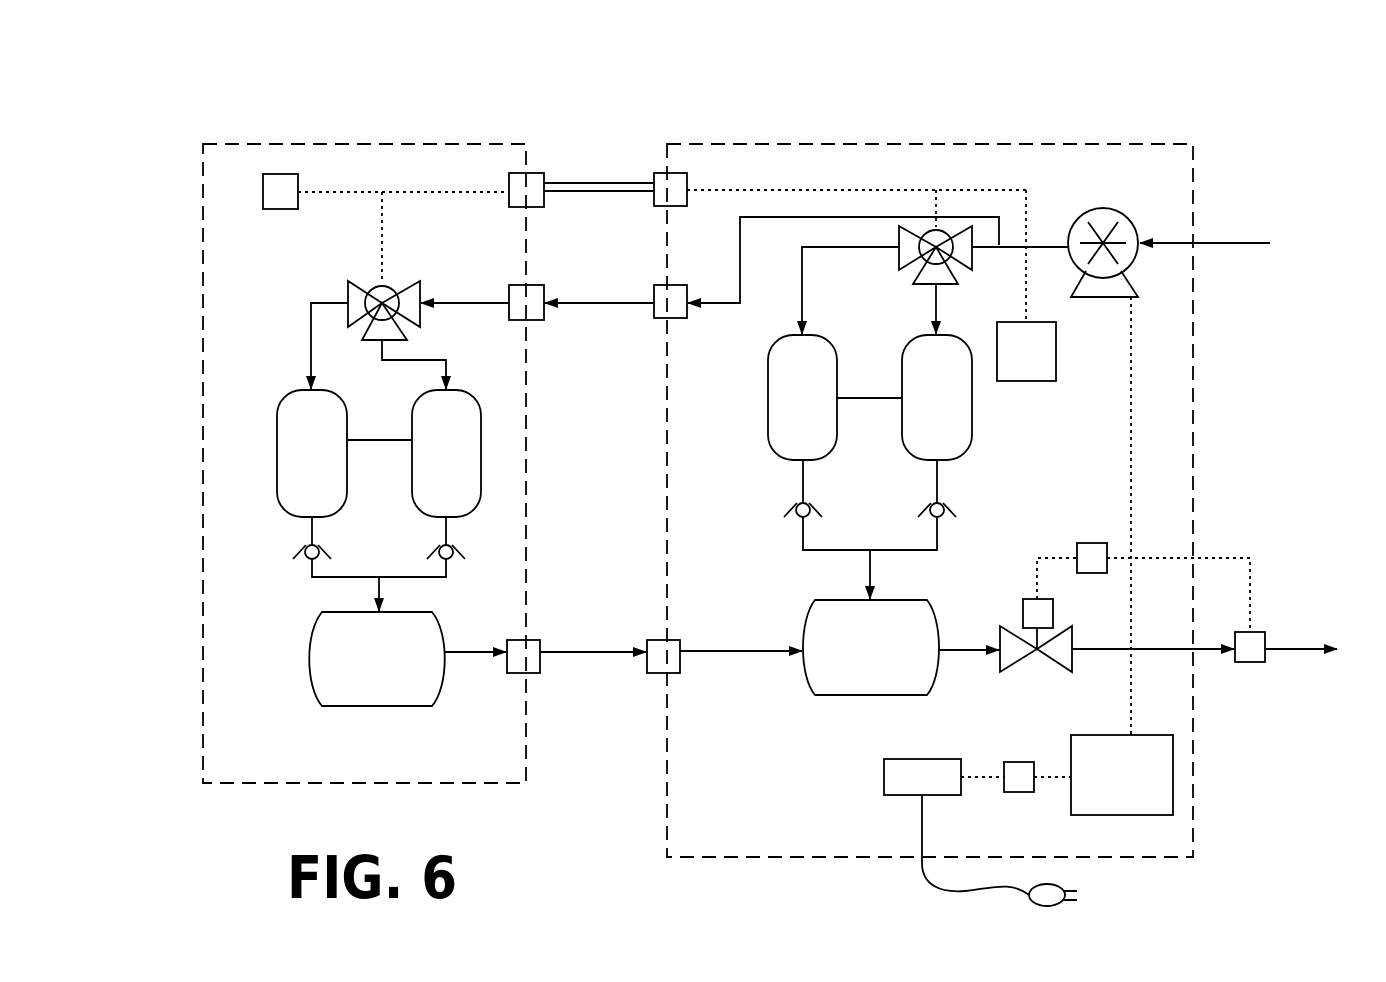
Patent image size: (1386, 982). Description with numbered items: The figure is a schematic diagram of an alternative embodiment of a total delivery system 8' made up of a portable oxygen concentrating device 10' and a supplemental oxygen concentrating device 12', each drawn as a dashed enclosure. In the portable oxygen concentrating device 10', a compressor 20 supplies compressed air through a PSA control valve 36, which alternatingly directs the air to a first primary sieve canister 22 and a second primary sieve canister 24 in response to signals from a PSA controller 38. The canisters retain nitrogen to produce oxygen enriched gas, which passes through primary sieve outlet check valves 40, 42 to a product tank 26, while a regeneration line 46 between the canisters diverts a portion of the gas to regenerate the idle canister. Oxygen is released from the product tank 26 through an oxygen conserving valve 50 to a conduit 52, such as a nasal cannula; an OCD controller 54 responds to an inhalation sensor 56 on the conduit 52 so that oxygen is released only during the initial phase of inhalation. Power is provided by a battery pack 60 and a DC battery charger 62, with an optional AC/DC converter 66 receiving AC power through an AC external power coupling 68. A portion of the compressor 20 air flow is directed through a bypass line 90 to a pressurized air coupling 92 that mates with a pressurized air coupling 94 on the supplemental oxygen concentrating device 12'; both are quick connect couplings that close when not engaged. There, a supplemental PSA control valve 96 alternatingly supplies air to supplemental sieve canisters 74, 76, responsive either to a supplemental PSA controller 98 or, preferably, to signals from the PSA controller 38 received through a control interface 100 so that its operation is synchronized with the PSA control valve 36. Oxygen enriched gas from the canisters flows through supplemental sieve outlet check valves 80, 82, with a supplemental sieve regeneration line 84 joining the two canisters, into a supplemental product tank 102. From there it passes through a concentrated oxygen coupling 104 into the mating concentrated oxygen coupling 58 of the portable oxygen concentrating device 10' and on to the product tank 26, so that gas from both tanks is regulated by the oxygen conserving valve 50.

The total delivery system 8' is at (324, 415).
The supplemental oxygen concentrating device 12' is at (364, 435).
The portable oxygen concentrating device 10' is at (930, 472).
The compressor 20 is at (1123, 210).
The PSA control valve 36 is at (897, 262).
The PSA controller 38 is at (1043, 367).
The first primary sieve canister 22 is at (819, 417).
The second primary sieve canister 24 is at (953, 417).
The regeneration line 46 is at (871, 397).
The primary sieve outlet check valve 40 is at (796, 502).
The primary sieve outlet check valve 42 is at (948, 503).
The product tank 26 is at (887, 663).
The oxygen conserving valve 50 is at (1023, 613).
The OCD controller 54 is at (1093, 543).
The conduit 52 is at (1152, 651).
The inhalation sensor 56 is at (1267, 632).
The battery pack 60 is at (1138, 792).
The DC battery charger 62 is at (1018, 761).
The AC/DC converter 66 is at (939, 758).
The AC external power coupling 68 is at (1038, 908).
The bypass line 90 is at (713, 302).
The pressurized air coupling 92 is at (672, 319).
The pressurized air coupling 94 is at (543, 321).
The supplemental PSA control valve 96 is at (420, 292).
The supplemental PSA controller 98 is at (279, 210).
The control interface 100 is at (590, 172).
The first supplemental sieve canister 74 is at (328, 471).
The second supplemental sieve canister 76 is at (462, 471).
The supplemental sieve regeneration line 84 is at (373, 439).
The supplemental sieve outlet check valve 80 is at (300, 545).
The supplemental sieve outlet check valve 82 is at (456, 545).
The supplemental product tank 102 is at (400, 673).
The concentrated oxygen coupling 104 is at (541, 646).
The concentrated oxygen coupling 58 is at (683, 642).